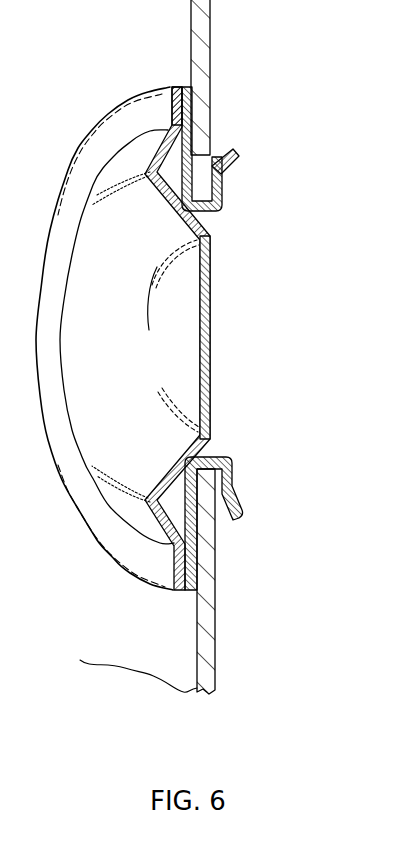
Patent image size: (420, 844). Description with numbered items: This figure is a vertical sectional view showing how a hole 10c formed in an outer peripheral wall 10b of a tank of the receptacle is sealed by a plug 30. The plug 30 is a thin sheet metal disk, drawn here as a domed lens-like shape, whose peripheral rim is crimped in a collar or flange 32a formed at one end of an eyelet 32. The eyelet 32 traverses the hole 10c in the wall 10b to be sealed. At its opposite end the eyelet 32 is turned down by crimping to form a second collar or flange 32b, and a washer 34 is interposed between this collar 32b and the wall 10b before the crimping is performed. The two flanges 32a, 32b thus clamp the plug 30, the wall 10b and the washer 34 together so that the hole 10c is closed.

The wall 10b is at (211, 637).
The hole 10c is at (207, 440).
The plug 30 is at (100, 555).
The eyelet 32 is at (232, 211).
The collar or flange 32a is at (166, 106).
The collar or flange 32b is at (233, 182).
The washer 34 is at (224, 519).